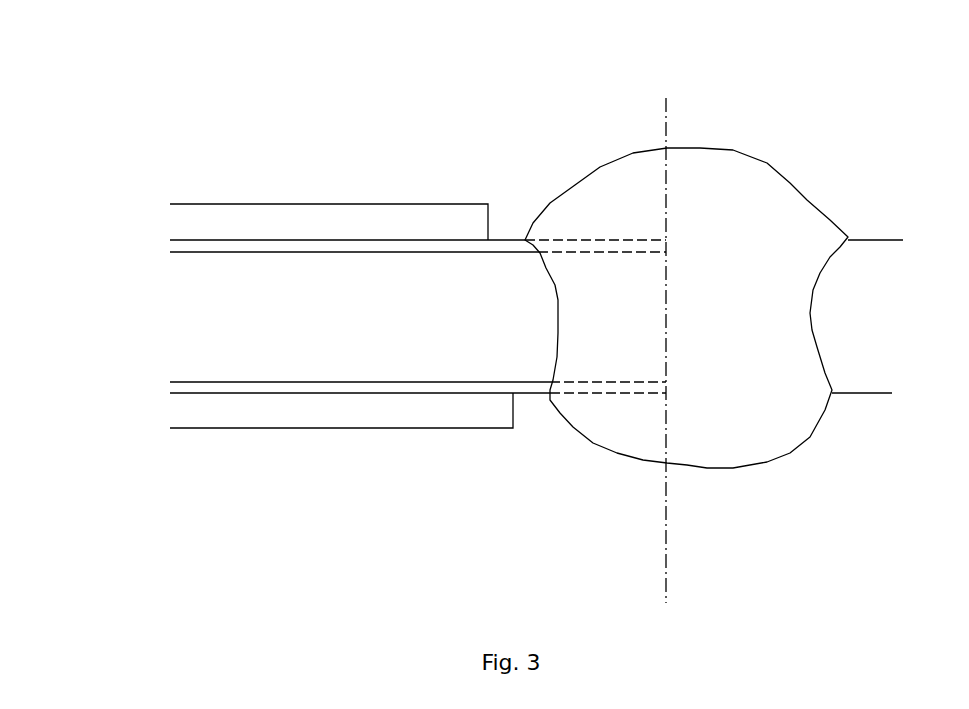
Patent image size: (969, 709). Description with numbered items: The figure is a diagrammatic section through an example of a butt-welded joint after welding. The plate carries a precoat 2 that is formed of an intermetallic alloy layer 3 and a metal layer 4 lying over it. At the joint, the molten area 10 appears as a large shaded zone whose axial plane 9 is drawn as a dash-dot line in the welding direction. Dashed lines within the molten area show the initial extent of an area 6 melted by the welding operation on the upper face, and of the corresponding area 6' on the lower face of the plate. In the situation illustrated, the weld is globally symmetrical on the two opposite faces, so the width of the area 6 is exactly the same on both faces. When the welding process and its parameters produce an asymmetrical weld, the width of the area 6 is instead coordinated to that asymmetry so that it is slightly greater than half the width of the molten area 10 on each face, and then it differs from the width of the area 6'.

The precoat 2 is at (64, 203).
The intermetallic alloy layer 3 is at (192, 248).
The metal layer 4 is at (252, 218).
The area melted by the welding operation 6 is at (589, 204).
The area melted by the welding operation 6' is at (596, 454).
The axial plane 9 is at (665, 125).
The molten area 10 is at (628, 182).